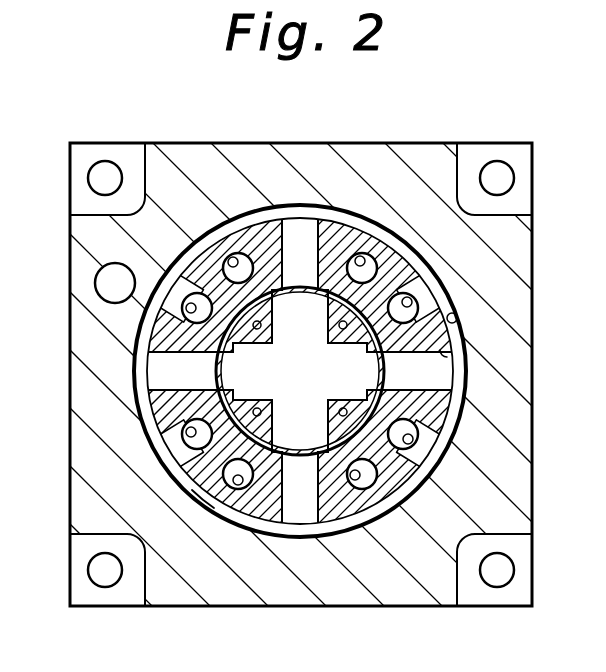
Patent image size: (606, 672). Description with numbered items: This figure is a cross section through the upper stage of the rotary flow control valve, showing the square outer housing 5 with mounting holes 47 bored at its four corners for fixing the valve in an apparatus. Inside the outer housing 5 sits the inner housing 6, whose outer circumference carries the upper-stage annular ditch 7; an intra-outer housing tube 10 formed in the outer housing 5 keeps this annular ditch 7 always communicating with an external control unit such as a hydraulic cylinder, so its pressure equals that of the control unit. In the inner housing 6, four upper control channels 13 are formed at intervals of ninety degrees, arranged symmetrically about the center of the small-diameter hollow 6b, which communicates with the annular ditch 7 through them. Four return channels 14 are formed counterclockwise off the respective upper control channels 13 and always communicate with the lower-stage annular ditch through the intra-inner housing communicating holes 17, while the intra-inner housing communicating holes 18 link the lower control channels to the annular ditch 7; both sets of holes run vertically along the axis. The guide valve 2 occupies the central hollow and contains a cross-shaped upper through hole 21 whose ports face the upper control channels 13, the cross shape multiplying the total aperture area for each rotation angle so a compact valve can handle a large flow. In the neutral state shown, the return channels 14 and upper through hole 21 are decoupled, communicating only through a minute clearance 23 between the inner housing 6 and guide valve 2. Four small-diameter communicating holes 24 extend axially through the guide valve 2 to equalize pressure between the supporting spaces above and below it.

The guide valve 2 is at (256, 607).
The outer housing 5 is at (534, 272).
The inner housing 6 is at (455, 404).
The small-diameter hollow 6b is at (150, 370).
The annular ditch 7 is at (458, 318).
The intra-outer housing tube 10 is at (96, 280).
The upper control channels 13 is at (310, 233).
The return channels 14 is at (256, 262).
The intra-inner housing communicating holes 17 is at (232, 256).
The intra-inner housing communicating holes 18 is at (370, 255).
The cross-shaped upper through hole 21 is at (300, 371).
The minute clearance 23 is at (204, 495).
The small-diameter communicating holes 24 is at (255, 330).
The mounting holes 47 is at (104, 160).